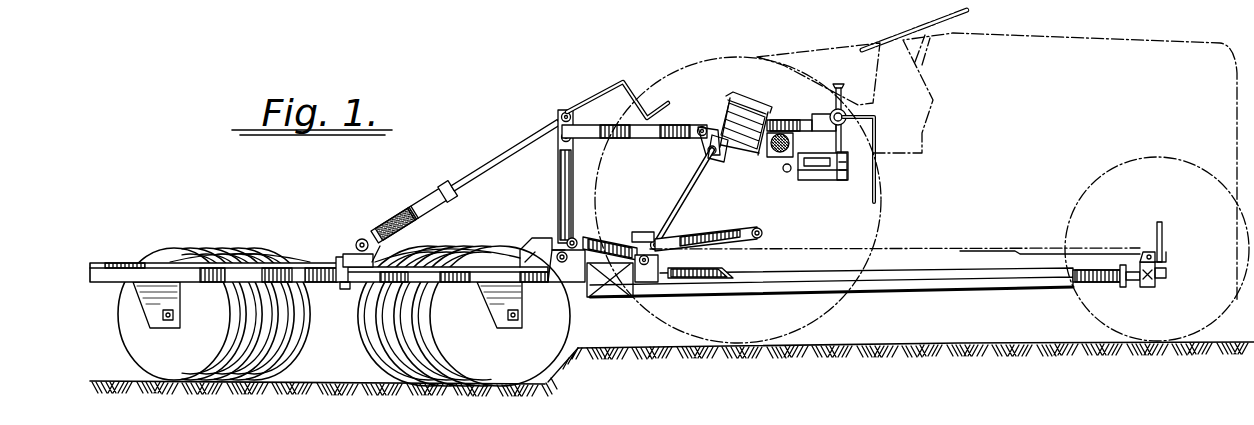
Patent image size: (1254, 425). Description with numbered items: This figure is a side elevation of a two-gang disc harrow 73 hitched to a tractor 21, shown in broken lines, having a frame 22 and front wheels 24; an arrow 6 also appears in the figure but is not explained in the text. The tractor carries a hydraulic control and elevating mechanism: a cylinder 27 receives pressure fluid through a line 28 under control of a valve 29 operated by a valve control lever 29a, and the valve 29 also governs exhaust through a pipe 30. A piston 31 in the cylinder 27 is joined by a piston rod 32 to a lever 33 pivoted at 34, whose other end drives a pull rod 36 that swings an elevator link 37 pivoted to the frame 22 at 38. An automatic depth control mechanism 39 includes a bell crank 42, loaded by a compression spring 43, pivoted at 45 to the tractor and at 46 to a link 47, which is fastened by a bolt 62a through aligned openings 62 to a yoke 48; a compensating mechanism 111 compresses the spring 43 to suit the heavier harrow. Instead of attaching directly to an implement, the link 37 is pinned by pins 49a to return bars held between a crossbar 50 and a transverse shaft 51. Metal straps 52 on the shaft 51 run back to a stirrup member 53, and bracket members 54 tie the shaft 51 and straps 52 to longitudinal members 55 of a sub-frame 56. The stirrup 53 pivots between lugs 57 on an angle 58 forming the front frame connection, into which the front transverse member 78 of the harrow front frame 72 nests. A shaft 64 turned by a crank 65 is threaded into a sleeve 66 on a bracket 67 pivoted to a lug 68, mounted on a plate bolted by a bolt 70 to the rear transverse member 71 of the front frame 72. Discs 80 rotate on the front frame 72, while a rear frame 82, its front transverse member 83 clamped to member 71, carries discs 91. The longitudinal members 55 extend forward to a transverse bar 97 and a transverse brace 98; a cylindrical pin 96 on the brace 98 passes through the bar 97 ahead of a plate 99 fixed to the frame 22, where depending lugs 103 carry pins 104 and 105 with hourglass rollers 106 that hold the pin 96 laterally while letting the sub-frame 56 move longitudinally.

The view direction arrow 6 is at (1184, 268).
The tractor 21 is at (1105, 36).
The frame 22 is at (970, 243).
The front wheels 24 is at (1110, 325).
The cylinder 27 is at (847, 181).
The line 28 is at (876, 136).
The valve 29 is at (846, 110).
The valve control lever 29a is at (841, 86).
The pipe 30 is at (822, 114).
The piston 31 is at (815, 182).
The piston rod 32 is at (785, 172).
The lever 33 is at (774, 153).
The pivot 34 is at (790, 144).
The pull rod 36 is at (683, 198).
The elevator lever or link 37 is at (718, 236).
The pivot 38 is at (762, 233).
The automatic depth control mechanism 39 is at (738, 160).
The bell crank 42 is at (722, 105).
The compression spring 43 is at (720, 150).
The pivot 45 is at (707, 151).
The pivot 46 is at (701, 126).
The link 47 is at (640, 141).
The yoke 48 is at (578, 190).
The pins 49a is at (560, 263).
The crossbar 50 is at (640, 231).
The transverse shaft 51 is at (648, 284).
The metal straps 52 is at (610, 286).
The stirrup member 53 is at (598, 240).
The bracket members 54 is at (705, 282).
The longitudinal members 55 is at (878, 292).
The sub-frame 56 is at (965, 292).
The lugs 57 is at (568, 238).
The front frame connection 58 is at (537, 242).
The aligned openings 62 is at (557, 162).
The bolt 62a is at (562, 117).
The shaft 64 is at (497, 142).
The crank 65 is at (642, 95).
The sleeve 66 is at (418, 206).
The bracket 67 is at (366, 239).
The lug 68 is at (395, 242).
The bolt 70 is at (342, 256).
The rear transverse member 71 is at (345, 290).
The front frame 72 is at (466, 236).
The two-gang disc harrow 73 is at (262, 236).
The front transverse member 78 is at (515, 248).
The discs 80 is at (500, 384).
The rear frame 82 is at (169, 258).
The front transverse member 83 is at (322, 262).
The discs 91 is at (283, 378).
The cylindrical pin 96 is at (1166, 275).
The transverse bar 97 is at (1085, 283).
The transverse brace 98 is at (1030, 265).
The plate 99 is at (1165, 250).
The depending lugs 103 is at (1158, 288).
The pin 104 is at (1147, 281).
The pin 105 is at (1142, 258).
The roller 106 is at (1157, 224).
The compensating mechanism 111 is at (739, 94).